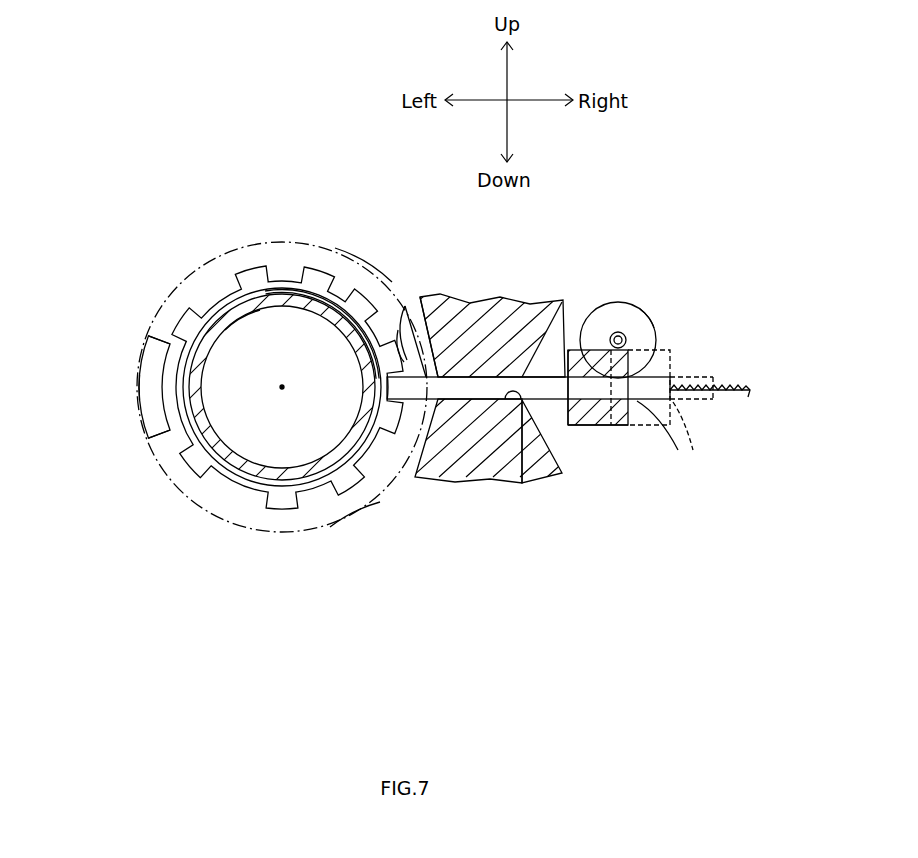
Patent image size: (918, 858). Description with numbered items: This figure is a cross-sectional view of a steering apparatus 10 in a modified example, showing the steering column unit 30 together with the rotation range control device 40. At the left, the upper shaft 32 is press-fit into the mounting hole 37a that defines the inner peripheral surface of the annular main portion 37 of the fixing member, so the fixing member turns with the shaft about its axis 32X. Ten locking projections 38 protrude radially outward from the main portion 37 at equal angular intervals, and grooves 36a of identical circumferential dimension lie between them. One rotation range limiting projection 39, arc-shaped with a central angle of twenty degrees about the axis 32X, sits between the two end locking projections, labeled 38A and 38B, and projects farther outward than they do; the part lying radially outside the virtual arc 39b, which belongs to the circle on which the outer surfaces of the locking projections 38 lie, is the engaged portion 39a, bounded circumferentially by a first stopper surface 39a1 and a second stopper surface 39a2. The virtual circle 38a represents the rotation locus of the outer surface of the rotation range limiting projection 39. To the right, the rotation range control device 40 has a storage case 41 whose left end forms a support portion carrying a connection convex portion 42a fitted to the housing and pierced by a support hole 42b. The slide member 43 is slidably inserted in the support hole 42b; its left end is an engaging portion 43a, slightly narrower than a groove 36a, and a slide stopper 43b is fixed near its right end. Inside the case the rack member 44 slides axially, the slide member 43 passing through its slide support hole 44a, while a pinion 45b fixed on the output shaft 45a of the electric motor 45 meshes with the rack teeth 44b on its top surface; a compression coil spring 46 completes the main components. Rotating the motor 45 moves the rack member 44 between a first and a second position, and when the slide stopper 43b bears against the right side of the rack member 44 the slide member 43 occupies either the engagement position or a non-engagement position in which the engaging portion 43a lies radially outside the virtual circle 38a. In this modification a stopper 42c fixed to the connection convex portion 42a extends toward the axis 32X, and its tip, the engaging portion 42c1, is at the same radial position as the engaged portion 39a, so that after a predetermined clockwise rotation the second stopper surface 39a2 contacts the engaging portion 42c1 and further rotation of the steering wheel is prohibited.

The steering apparatus 10 is at (416, 413).
The rotating body unit 30 is at (304, 411).
The upper shaft 32 is at (203, 330).
The axis of the upper shaft 32X is at (279, 391).
The grooves 36a is at (232, 280).
The annular main portion 37 is at (267, 302).
The mounting hole 37a is at (239, 314).
The locking projections 38 is at (334, 419).
The first bearing 38A is at (420, 350).
The second bearing 38B is at (386, 472).
The virtual circle 38a is at (319, 536).
The rotation range limiting projection 39 is at (221, 348).
The engaged portion 39a is at (149, 353).
The first stopper surface 39a1 is at (162, 443).
The second stopper surface 39a2 is at (165, 332).
The virtual arc 39b is at (147, 398).
The rotation range control device 40 is at (455, 412).
The storage case 41 is at (521, 298).
The connection convex portion 42a is at (444, 297).
The support hole 42b is at (526, 481).
The stopper 42c is at (416, 310).
The engaging portion 42c1 is at (400, 332).
The slide member 43 is at (672, 372).
The engaging portion 43a is at (508, 404).
The slide stopper 43b is at (690, 436).
The rack member 44 is at (640, 427).
The slide support hole 44a is at (590, 427).
The rack teeth 44b is at (576, 349).
The electric motor for the slide member 45 is at (658, 342).
The output shaft 45a is at (618, 332).
The pinion 45b is at (652, 316).
The compression coil spring 46 is at (749, 397).